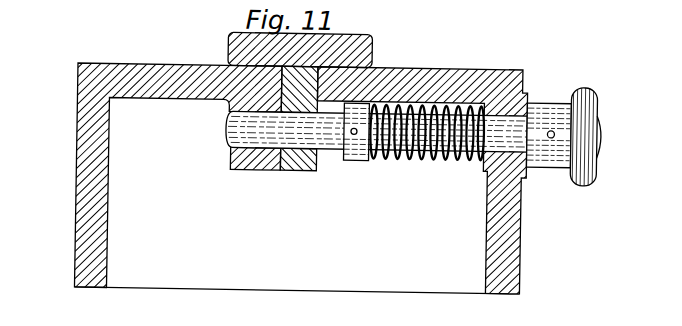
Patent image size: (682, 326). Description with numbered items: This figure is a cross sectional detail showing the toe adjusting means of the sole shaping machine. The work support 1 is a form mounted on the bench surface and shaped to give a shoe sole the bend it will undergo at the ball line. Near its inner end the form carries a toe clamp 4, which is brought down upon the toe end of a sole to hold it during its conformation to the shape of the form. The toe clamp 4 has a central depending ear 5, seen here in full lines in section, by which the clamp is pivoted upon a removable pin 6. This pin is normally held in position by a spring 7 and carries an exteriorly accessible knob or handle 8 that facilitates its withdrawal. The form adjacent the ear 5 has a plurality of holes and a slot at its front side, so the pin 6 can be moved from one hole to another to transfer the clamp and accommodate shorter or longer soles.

The work support 1 is at (92, 201).
The toe clamp 4 is at (355, 49).
The central depending ear 5 is at (305, 170).
The removable pin 6 is at (233, 125).
The spring 7 is at (434, 158).
The knob or handle 8 is at (593, 92).